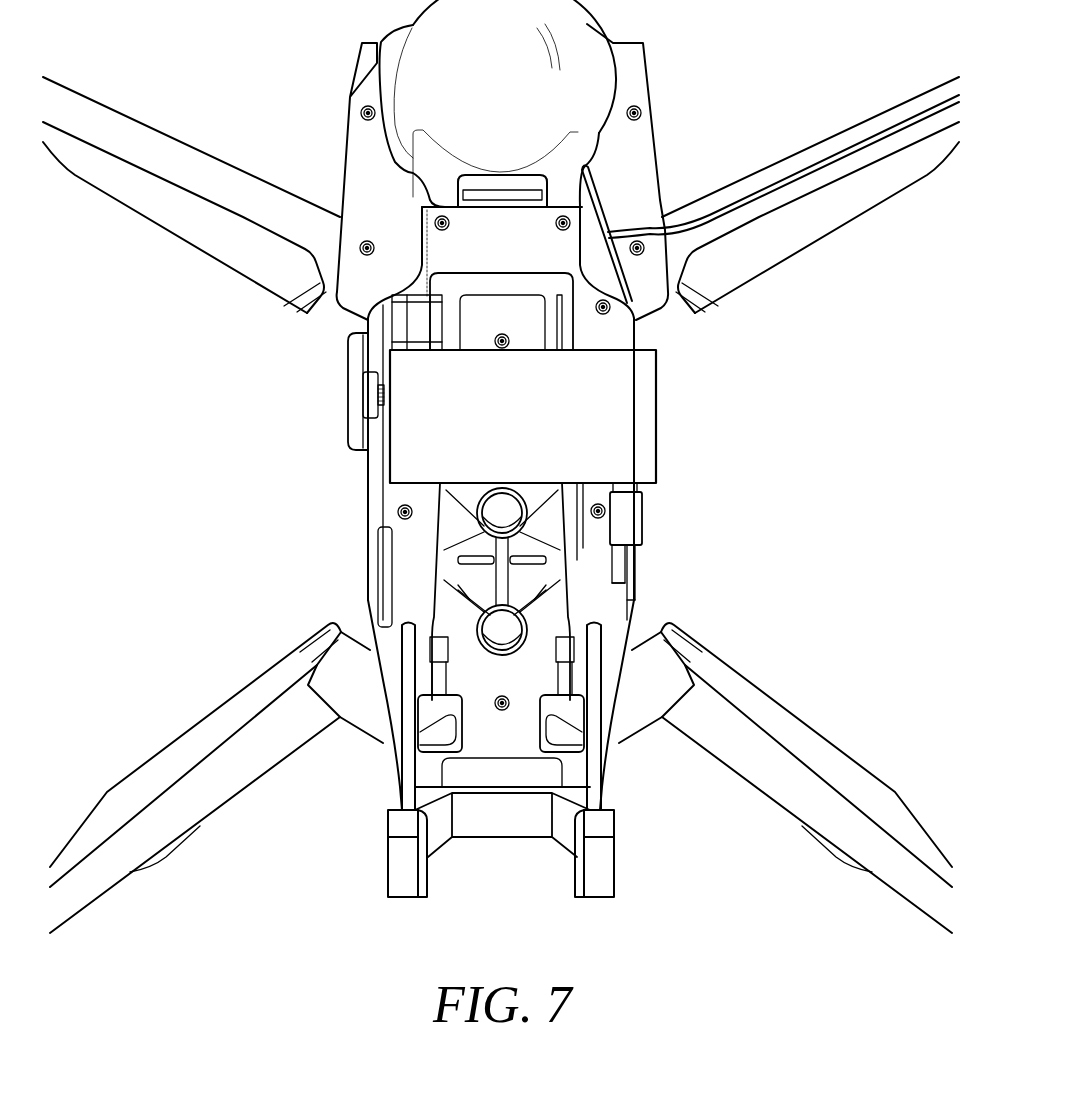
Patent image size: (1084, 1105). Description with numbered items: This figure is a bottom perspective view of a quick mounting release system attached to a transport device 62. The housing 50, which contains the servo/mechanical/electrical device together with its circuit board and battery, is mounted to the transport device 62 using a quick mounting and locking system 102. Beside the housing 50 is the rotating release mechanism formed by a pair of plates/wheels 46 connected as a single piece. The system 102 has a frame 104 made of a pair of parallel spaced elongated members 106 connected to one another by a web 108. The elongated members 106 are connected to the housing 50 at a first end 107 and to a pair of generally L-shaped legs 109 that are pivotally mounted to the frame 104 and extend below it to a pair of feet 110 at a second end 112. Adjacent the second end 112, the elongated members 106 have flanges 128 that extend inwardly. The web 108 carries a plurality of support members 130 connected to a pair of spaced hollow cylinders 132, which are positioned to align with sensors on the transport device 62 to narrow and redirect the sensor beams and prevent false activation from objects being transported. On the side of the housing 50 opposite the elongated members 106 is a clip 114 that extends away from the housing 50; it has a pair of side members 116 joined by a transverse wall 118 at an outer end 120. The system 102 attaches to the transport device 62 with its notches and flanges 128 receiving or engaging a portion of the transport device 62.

The plates/wheels 46 is at (352, 378).
The housing 50 is at (658, 397).
The transport device 62 is at (630, 88).
The quick mounting and locking system 102 is at (692, 546).
The frame 104 is at (628, 578).
The elongated members 106 is at (642, 517).
The first end 107 is at (642, 497).
The web 108 is at (447, 572).
The legs 109 is at (403, 785).
The feet 110 is at (388, 860).
The second end 112 is at (430, 765).
The clip 114 is at (555, 262).
The side members 116 is at (450, 306).
The transverse wall 118 is at (455, 283).
The outer end 120 is at (670, 314).
The flanges 128 is at (430, 743).
The support members 130 is at (528, 604).
The hollow cylinders 132 is at (482, 510).